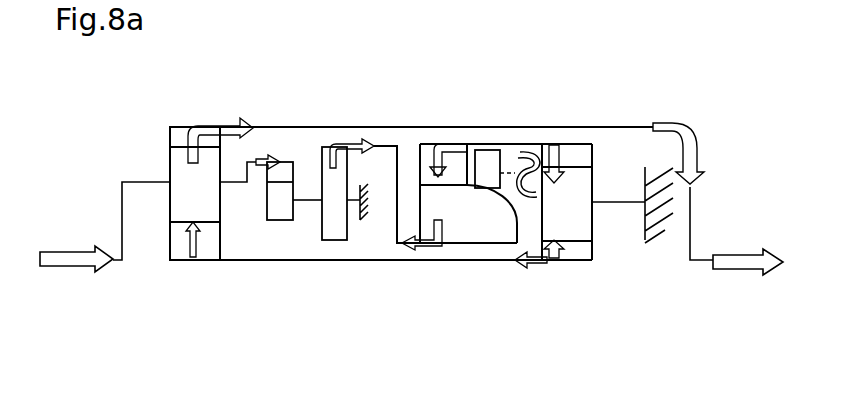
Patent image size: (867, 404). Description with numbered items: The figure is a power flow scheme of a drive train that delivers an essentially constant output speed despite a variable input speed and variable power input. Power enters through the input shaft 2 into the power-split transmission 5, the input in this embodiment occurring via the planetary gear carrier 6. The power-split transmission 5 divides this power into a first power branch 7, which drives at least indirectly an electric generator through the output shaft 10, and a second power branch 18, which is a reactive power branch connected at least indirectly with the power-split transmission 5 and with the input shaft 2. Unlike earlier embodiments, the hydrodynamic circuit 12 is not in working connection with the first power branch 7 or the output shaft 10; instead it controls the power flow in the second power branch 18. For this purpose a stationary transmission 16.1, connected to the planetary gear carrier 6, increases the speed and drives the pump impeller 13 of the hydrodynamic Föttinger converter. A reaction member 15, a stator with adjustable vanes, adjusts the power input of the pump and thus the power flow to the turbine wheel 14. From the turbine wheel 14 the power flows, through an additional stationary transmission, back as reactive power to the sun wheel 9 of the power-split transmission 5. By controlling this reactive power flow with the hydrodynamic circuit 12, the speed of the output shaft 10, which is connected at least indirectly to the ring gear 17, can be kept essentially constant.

The input shaft 2 is at (116, 262).
The power-split transmission 5 is at (226, 348).
The planetary gear carrier 6 is at (205, 203).
The first power branch 7 is at (333, 127).
The sun wheel 9 is at (180, 258).
The output shaft 10 is at (690, 213).
The hydrodynamic circuit 12 is at (446, 108).
The pump impeller 13 is at (489, 233).
The turbine wheel 14 is at (463, 146).
The reaction member 15 is at (490, 152).
The actuating cylinder 16.1 is at (308, 252).
The ring gear 17 is at (188, 128).
The second power branch 18 is at (337, 261).